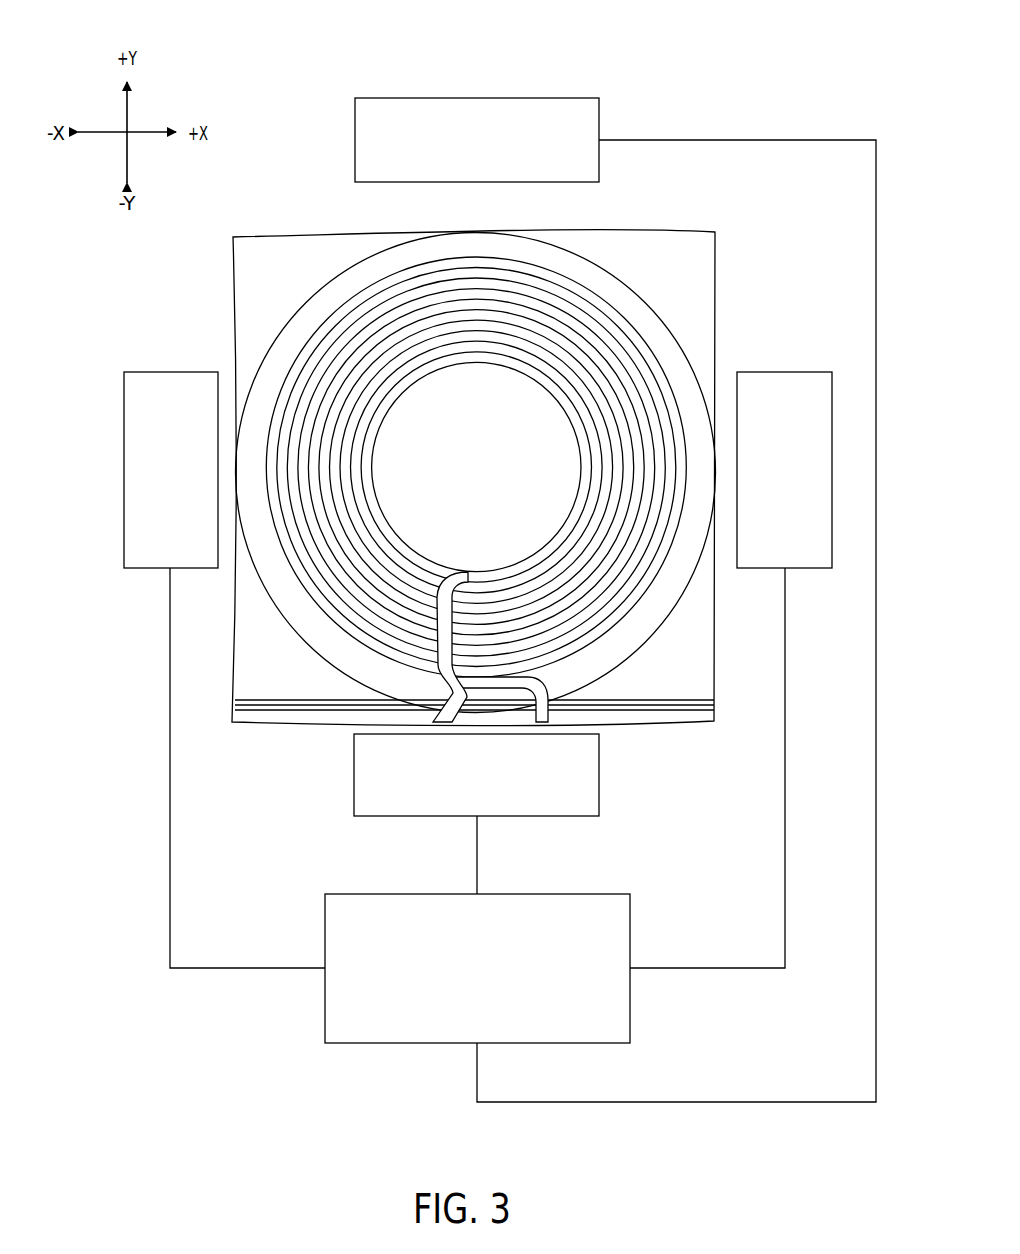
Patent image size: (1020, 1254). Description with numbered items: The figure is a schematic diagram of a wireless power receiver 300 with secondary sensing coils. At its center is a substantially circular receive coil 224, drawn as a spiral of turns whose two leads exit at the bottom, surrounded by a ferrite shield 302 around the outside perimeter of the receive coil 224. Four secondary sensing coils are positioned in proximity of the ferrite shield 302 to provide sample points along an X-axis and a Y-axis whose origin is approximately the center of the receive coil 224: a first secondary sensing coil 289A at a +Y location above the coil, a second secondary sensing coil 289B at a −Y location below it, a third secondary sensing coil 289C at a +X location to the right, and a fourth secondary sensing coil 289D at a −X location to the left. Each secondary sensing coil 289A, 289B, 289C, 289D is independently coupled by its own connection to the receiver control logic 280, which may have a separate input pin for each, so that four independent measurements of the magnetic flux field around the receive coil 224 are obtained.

The wireless power receiver 300 is at (637, 87).
The receive coil 224 is at (474, 438).
The ferrite shield 302 is at (437, 233).
The first secondary sensing coil 289A is at (483, 98).
The second secondary sensing coil 289B is at (599, 777).
The third secondary sensing coil 289C is at (780, 372).
The fourth secondary sensing coil 289D is at (170, 372).
The receiver control logic 280 is at (631, 940).